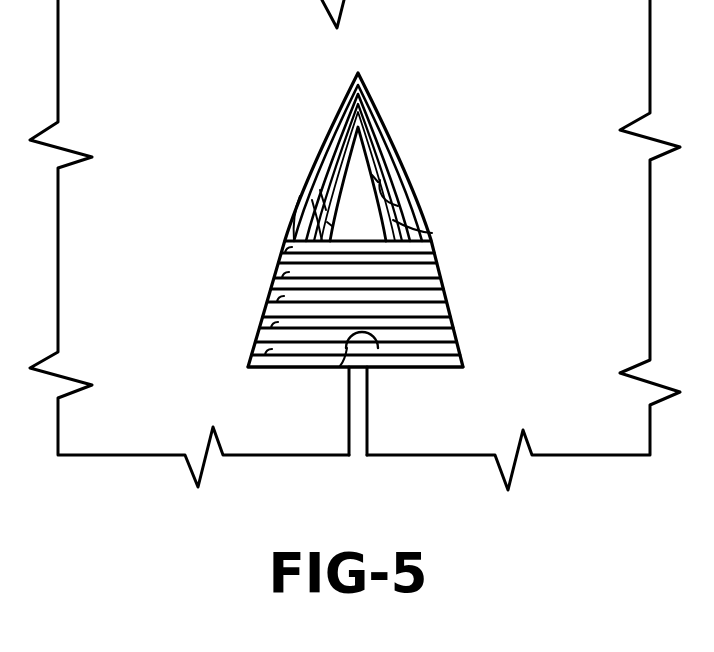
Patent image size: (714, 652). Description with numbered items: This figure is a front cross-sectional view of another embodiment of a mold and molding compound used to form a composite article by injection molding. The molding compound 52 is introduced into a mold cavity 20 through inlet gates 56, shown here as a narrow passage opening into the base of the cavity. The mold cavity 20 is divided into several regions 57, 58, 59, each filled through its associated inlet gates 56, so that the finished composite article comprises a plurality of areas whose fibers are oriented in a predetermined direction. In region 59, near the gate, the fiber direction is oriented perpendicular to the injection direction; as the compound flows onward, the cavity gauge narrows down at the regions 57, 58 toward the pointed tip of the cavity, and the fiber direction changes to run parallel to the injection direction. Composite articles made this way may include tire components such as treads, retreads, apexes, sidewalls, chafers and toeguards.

The mold cavity 20 is at (432, 233).
The molding compound 52 is at (366, 350).
The inlet gates 56 is at (356, 379).
The region of the mold cavity 57 is at (410, 168).
The region of the mold cavity 58 is at (298, 188).
The region of the mold cavity 59 is at (362, 352).